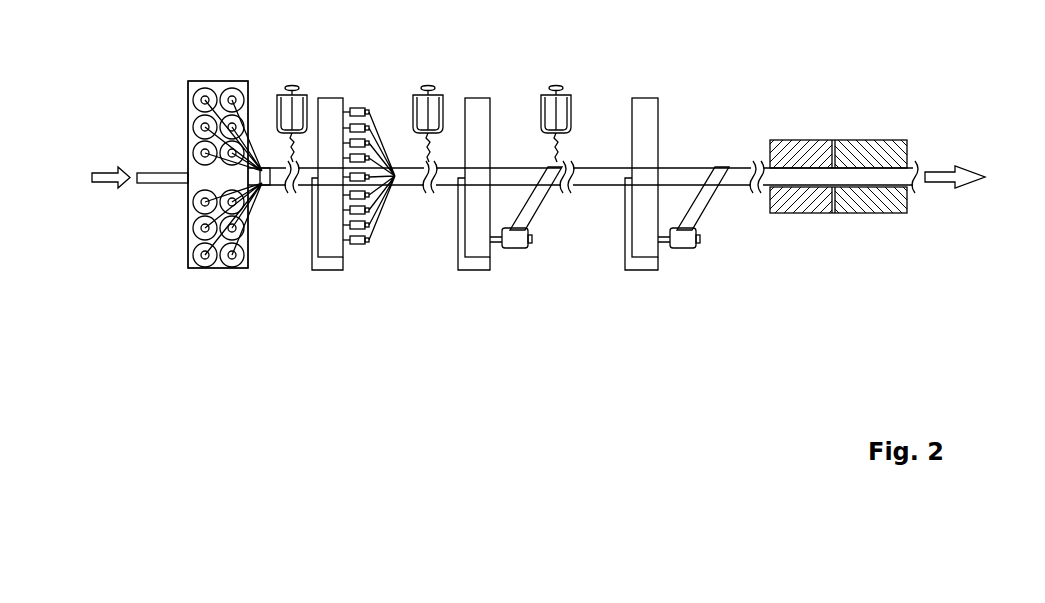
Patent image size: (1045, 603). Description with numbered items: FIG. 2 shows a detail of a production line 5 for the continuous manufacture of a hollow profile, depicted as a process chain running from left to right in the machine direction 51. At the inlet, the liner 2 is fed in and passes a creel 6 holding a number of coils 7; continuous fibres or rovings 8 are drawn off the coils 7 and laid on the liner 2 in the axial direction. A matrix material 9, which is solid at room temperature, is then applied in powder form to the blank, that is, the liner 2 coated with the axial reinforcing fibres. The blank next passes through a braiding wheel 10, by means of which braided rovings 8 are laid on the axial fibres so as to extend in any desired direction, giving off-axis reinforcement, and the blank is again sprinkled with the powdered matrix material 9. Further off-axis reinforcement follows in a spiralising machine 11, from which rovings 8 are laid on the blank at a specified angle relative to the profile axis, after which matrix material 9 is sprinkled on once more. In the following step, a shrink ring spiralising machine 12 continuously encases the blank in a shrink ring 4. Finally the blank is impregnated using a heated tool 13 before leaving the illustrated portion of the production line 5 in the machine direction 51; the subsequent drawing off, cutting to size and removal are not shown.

The liner 2 is at (155, 173).
The shrink ring 4 is at (717, 172).
The production line 5 is at (181, 57).
The creel 6 is at (217, 268).
The coils 7 is at (198, 257).
The rovings 8 is at (267, 185).
The matrix material 9 is at (289, 156).
The braiding wheel 10 is at (330, 257).
The spiralising machine 11 is at (477, 257).
The shrink ring spiralising machine 12 is at (645, 257).
The heated tool 13 is at (815, 200).
The machine direction 51 is at (109, 177).